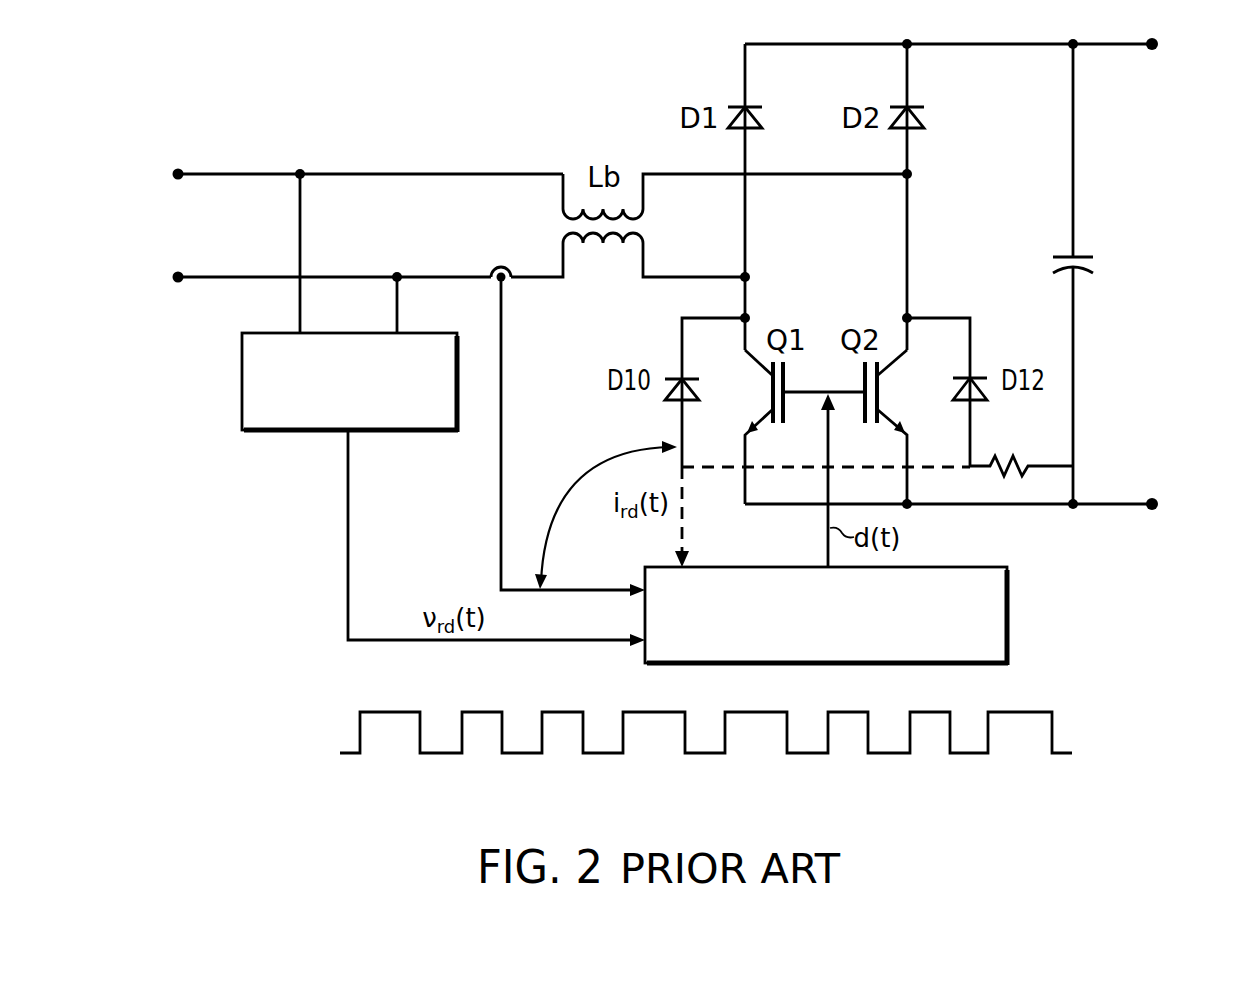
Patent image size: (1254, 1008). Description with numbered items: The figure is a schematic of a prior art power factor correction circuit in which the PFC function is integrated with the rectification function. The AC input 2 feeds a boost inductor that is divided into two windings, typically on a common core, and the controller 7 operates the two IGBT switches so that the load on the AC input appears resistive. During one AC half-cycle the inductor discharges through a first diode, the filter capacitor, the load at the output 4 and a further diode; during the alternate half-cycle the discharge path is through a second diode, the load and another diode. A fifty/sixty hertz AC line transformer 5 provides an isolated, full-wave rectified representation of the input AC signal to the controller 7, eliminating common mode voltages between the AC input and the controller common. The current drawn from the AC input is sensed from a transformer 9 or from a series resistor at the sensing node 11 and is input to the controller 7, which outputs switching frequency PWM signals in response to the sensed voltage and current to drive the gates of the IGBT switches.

The AC input 2 is at (121, 179).
The DC output (OC OUT) 4 is at (1202, 200).
The line transformer 5 is at (242, 386).
The controller 7 is at (1008, 620).
The transformer 9 is at (503, 279).
The current sensing node (R5) 11 is at (1032, 458).